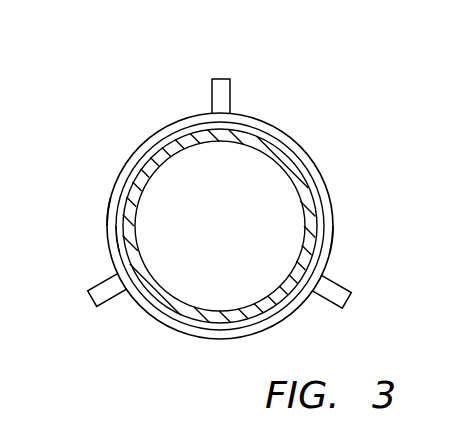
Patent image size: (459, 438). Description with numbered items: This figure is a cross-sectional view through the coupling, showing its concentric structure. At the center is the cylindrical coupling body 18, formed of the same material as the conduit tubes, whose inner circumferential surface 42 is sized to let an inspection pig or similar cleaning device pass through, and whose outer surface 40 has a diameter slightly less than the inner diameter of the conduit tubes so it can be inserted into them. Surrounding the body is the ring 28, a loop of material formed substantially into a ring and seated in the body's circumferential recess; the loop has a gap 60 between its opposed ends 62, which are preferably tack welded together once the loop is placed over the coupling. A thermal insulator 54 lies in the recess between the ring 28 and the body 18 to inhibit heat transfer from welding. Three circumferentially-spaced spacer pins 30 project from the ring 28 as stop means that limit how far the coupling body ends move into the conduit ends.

The coupling body 18 is at (327, 228).
The ring 28 is at (327, 193).
The spacer pins 30 is at (230, 90).
The outer surface 40 is at (170, 163).
The inner circumferential surface 42 is at (147, 263).
The thermal insulator 54 is at (290, 145).
The gap 60 is at (108, 232).
The opposed ends 62 is at (108, 220).